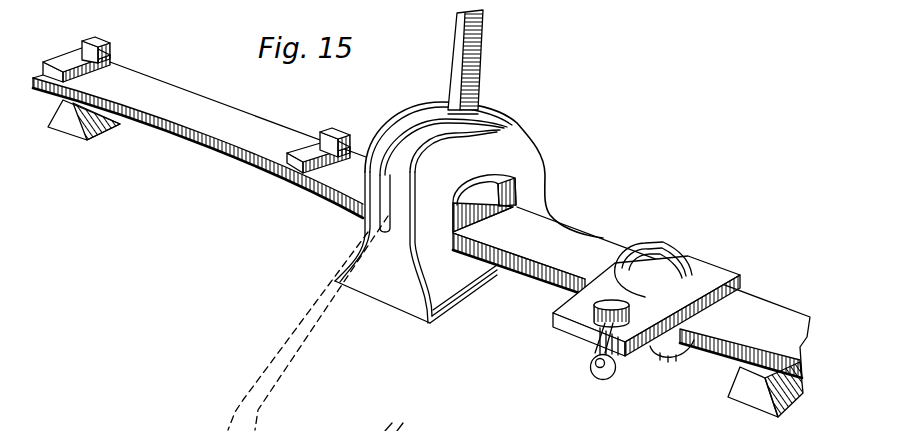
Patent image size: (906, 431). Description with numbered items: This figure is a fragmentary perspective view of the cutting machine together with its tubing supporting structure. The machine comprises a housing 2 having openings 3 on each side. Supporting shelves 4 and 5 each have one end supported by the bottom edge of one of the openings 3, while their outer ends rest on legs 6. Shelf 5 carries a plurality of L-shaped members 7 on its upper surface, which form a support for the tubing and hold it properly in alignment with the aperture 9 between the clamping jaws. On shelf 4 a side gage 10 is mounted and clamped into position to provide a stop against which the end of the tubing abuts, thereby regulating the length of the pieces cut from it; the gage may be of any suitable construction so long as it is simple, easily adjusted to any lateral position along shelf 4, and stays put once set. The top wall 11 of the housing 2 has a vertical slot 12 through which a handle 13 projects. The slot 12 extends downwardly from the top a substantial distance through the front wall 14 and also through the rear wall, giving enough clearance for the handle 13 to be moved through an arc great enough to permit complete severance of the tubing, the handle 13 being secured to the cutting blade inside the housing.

The housing 2 is at (528, 153).
The openings 3 is at (514, 191).
The supporting shelf 4 is at (596, 248).
The supporting shelf 5 is at (216, 138).
The legs 6 is at (84, 135).
The L-shaped members 7 is at (105, 51).
The aperture 9 is at (478, 205).
The side gage 10 is at (713, 272).
The top wall 11 is at (475, 116).
The vertical slot 12 is at (416, 121).
The handle 13 is at (473, 50).
The front wall 14 is at (404, 250).